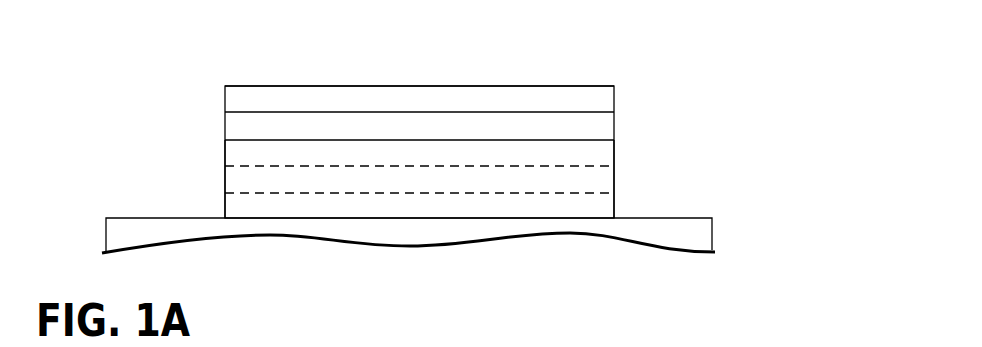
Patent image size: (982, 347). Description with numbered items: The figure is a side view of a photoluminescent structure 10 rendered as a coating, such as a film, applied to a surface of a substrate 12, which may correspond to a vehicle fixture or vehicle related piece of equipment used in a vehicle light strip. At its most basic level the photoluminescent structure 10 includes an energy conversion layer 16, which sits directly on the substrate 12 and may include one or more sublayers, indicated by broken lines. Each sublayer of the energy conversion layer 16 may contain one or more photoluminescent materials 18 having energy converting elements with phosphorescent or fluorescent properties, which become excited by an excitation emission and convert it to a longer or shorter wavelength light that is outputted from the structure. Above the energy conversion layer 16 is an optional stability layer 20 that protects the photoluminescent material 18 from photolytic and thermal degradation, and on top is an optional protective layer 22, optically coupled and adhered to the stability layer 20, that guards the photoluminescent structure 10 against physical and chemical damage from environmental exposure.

The photoluminescent structure 10 is at (556, 62).
The substrate 12 is at (658, 218).
The energy conversion layer 16 is at (225, 177).
The photoluminescent material 18 is at (570, 178).
The stability layer 20 is at (225, 126).
The protective layer 22 is at (311, 86).